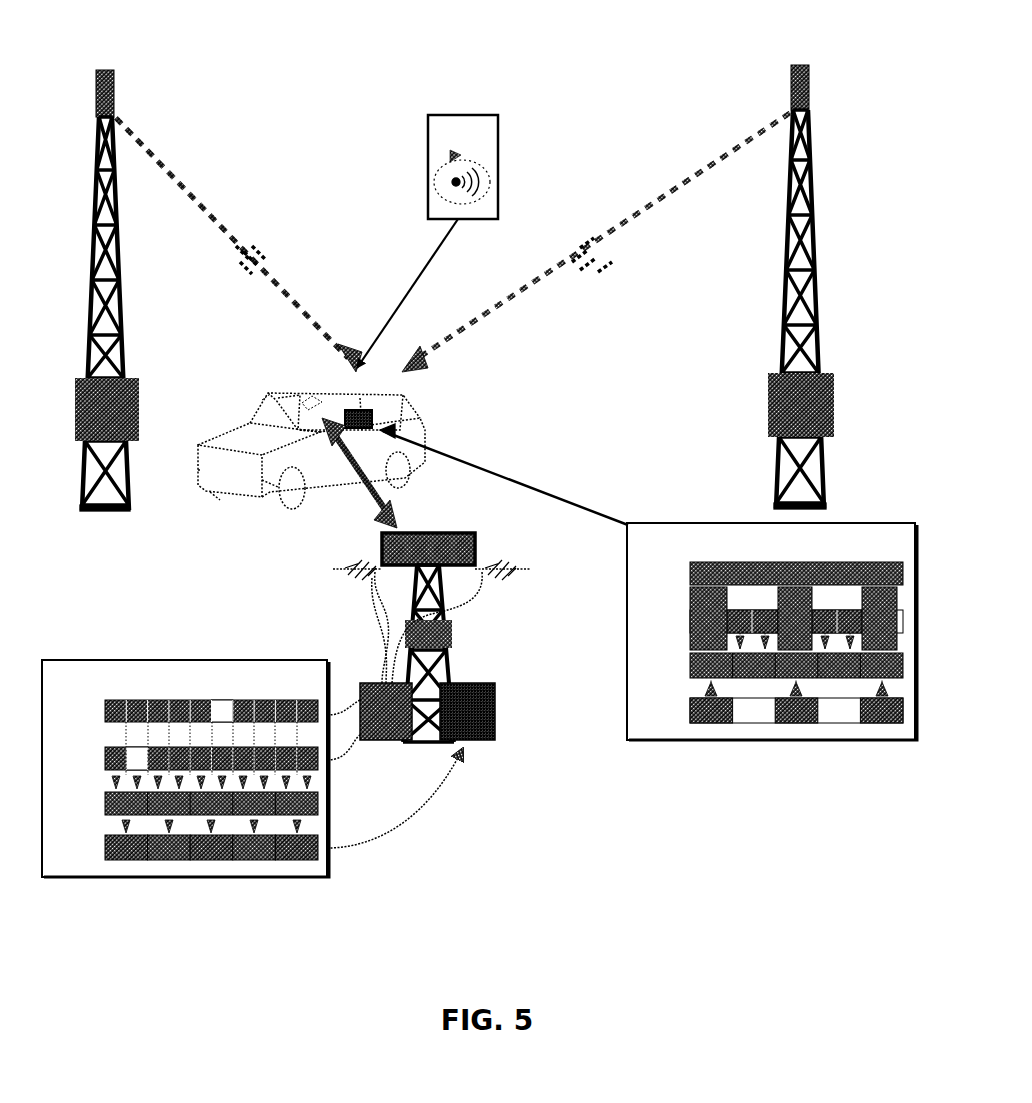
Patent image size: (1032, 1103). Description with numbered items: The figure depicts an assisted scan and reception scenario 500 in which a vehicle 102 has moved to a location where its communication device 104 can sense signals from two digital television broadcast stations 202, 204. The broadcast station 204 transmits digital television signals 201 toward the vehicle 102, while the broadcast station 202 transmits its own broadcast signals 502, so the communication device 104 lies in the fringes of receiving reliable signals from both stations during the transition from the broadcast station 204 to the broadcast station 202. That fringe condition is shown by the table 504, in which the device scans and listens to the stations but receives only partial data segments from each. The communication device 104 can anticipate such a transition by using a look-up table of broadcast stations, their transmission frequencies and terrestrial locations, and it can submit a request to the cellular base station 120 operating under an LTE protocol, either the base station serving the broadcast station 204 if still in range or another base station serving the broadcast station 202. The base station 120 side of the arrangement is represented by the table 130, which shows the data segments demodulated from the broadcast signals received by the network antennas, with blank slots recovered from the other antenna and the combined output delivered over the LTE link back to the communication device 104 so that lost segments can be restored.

The assisted scan and reception system 500 is at (479, 503).
The vehicle 102 is at (247, 423).
The communication device 104 is at (374, 422).
The cellular base station 120 is at (448, 635).
The table 130 is at (145, 657).
The digital television signals 201 is at (655, 197).
The broadcast station 202 is at (128, 505).
The broadcast station 204 is at (832, 390).
The HDTV2 broadcast signal 502 is at (213, 235).
The table 504 is at (705, 742).